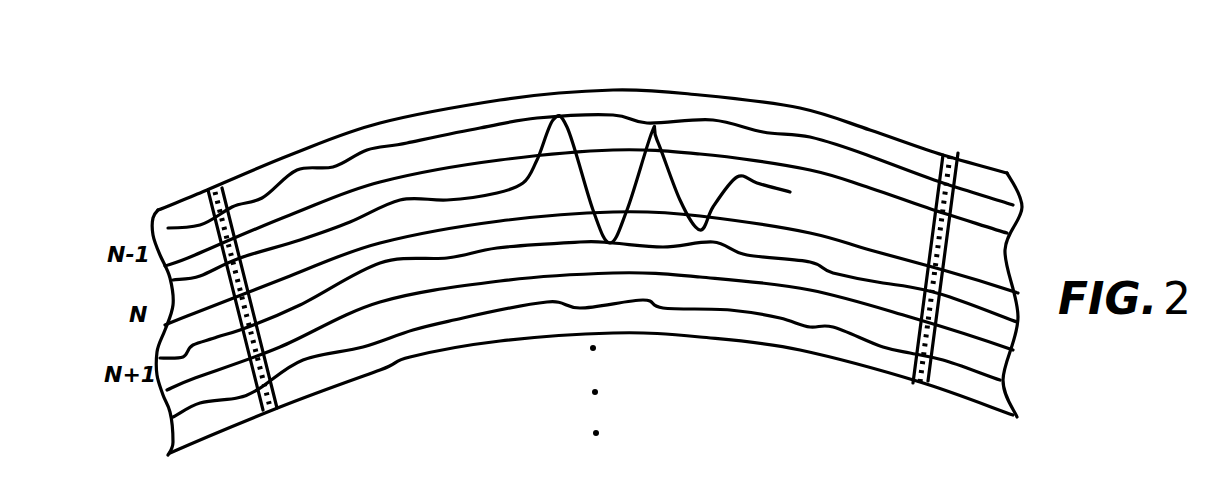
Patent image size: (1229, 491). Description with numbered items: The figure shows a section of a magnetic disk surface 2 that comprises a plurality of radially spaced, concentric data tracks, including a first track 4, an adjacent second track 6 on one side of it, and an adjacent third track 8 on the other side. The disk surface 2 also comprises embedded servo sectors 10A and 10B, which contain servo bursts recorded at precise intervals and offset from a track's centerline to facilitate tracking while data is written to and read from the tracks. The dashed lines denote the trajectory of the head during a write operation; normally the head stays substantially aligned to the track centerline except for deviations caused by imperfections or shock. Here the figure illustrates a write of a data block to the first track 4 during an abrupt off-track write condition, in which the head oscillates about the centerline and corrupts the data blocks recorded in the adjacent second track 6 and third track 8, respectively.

The magnetic disk surface 2 is at (883, 107).
The first track (N) 4 is at (178, 280).
The second track (N−1) 6 is at (170, 220).
The third track (N+1) 8 is at (165, 343).
The embedded servo sector 10A is at (210, 190).
The embedded servo sector 10B is at (950, 155).